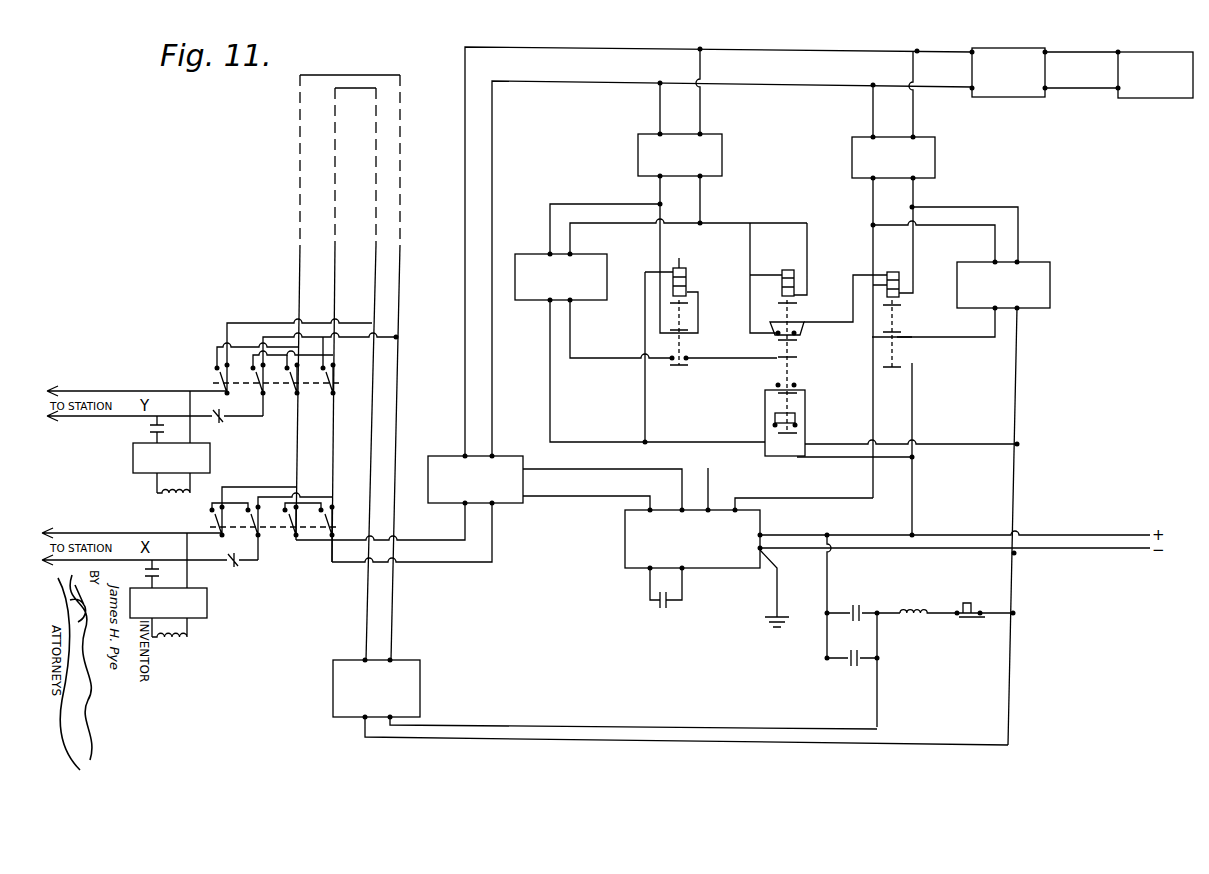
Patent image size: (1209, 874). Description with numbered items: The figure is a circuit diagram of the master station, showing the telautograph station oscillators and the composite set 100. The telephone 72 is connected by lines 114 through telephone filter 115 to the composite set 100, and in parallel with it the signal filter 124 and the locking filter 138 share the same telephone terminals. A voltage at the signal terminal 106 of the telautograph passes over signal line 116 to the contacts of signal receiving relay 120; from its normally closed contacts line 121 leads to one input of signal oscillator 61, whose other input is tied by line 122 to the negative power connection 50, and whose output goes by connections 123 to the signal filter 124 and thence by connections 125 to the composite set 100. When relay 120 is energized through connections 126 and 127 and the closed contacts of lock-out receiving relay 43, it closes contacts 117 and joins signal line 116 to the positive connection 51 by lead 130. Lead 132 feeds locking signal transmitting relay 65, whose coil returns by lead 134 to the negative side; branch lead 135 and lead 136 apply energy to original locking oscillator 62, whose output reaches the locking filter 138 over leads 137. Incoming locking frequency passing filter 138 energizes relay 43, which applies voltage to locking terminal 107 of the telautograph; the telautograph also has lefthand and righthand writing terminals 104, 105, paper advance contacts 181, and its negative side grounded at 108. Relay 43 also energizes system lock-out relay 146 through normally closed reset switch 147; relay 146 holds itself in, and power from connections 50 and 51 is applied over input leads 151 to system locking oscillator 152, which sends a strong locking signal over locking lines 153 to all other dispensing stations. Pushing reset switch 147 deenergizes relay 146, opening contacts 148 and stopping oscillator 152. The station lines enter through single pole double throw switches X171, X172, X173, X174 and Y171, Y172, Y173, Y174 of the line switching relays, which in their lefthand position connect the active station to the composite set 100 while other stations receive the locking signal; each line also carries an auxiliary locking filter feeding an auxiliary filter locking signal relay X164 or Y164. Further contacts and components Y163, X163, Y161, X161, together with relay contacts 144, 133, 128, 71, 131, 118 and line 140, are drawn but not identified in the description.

The single pole double throw switch Y171 is at (221, 365).
The single pole double throw switch Y172 is at (265, 394).
The single pole double throw switch Y173 is at (309, 387).
The single pole double throw switch Y174 is at (340, 378).
The single pole double throw switch X171 is at (216, 520).
The single pole double throw switch X172 is at (272, 533).
The single pole double throw switch X173 is at (311, 533).
The single pole double throw switch X174 is at (346, 534).
The condenser Y163 is at (150, 429).
The condenser X163 is at (160, 575).
The contact Y161 is at (222, 424).
The contact X161 is at (238, 567).
The auxiliary filter locking signal relay Y164 is at (150, 485).
The auxiliary filter locking signal relay X164 is at (187, 637).
The composite set 100 is at (440, 506).
The leads 137 is at (608, 220).
The locking filter 138 is at (722, 148).
The original locking oscillator 62 is at (607, 262).
The lead 136 is at (572, 322).
The branch lead 135 is at (552, 382).
The lead 134 is at (643, 406).
The locking signal transmitting relay 65 is at (682, 266).
The relay contact 144 is at (690, 330).
The relay contact 133 is at (690, 364).
The lead 132 is at (750, 354).
The lock-out receiving relay 43 is at (789, 268).
The connection 126 is at (803, 316).
The connection 127 is at (845, 298).
The relay contact 128 is at (800, 337).
The relay contact 71 is at (778, 376).
The relay contact 131 is at (798, 382).
The signal receiving relay 120 is at (892, 270).
The relay contact 118 is at (901, 336).
The normally open contacts 117 is at (874, 365).
The lead 130 is at (912, 401).
The connections 123 is at (975, 210).
The connections 125 is at (912, 98).
The signal filter 124 is at (935, 158).
The signal oscillator 61 is at (1050, 270).
The line 121 is at (948, 345).
The line 122 is at (1018, 478).
The telephone filter 115 is at (1005, 46).
The lines 114 is at (1073, 88).
The telephone 72 is at (1168, 52).
The locking terminal 107 is at (703, 513).
The lefthand writing terminal 104 is at (685, 506).
The righthand writing terminal 105 is at (648, 512).
The signal terminal 106 is at (762, 516).
The locking line 140 is at (752, 468).
The signal line 116 is at (830, 500).
The ground 108 is at (777, 612).
The paper advance contacts 181 is at (660, 609).
The positive power connection 51 is at (1104, 533).
The negative power connection 50 is at (1080, 560).
The system lock-out relay 146 is at (904, 620).
The reset switch 147 is at (958, 622).
The contacts 148 is at (852, 667).
The system locking oscillator 152 is at (420, 685).
The locking lines 153 is at (392, 635).
The input leads 151 is at (618, 740).